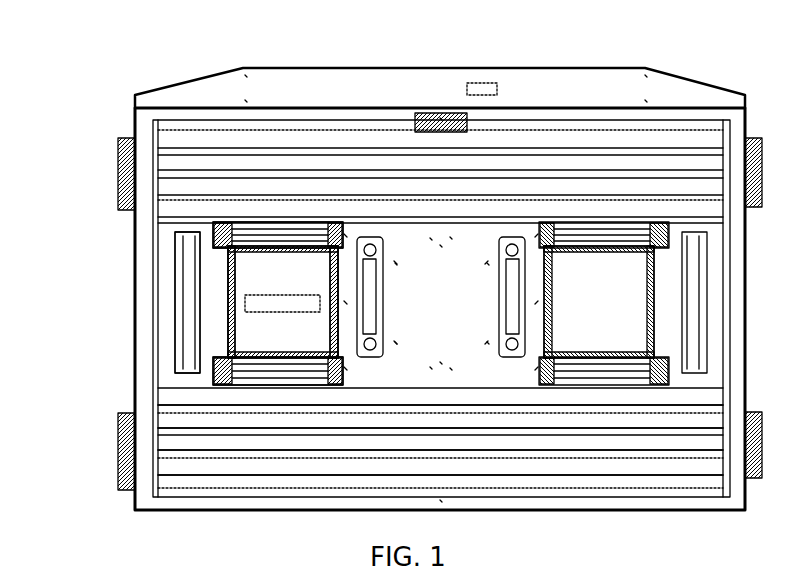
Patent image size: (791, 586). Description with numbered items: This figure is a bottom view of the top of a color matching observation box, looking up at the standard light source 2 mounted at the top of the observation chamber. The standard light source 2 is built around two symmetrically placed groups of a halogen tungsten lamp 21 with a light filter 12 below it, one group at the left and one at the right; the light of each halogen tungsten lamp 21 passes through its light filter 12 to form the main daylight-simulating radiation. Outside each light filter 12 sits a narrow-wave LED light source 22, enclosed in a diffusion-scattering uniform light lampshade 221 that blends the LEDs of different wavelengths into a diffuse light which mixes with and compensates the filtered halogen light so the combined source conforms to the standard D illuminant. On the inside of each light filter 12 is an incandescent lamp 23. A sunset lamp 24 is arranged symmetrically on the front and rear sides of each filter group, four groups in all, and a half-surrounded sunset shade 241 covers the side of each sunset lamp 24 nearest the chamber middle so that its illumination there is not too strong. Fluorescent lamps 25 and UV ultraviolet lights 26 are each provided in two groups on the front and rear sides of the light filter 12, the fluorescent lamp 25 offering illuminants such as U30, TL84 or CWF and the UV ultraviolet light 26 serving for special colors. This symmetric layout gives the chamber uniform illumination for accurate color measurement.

The standard light source 2 is at (60, 243).
The light filter 12 is at (255, 267).
The halogen tungsten lamp 21 is at (200, 290).
The narrow-wave LED light source 22 is at (228, 333).
The incandescent lamp 23 is at (333, 320).
The sunset lamp 24 is at (213, 377).
The fluorescent lamp 25 is at (217, 468).
The UV ultraviolet light 26 is at (217, 421).
The diffusion-scattering uniform light lampshade 221 is at (118, 200).
The half-surrounded sunset shade 241 is at (302, 223).